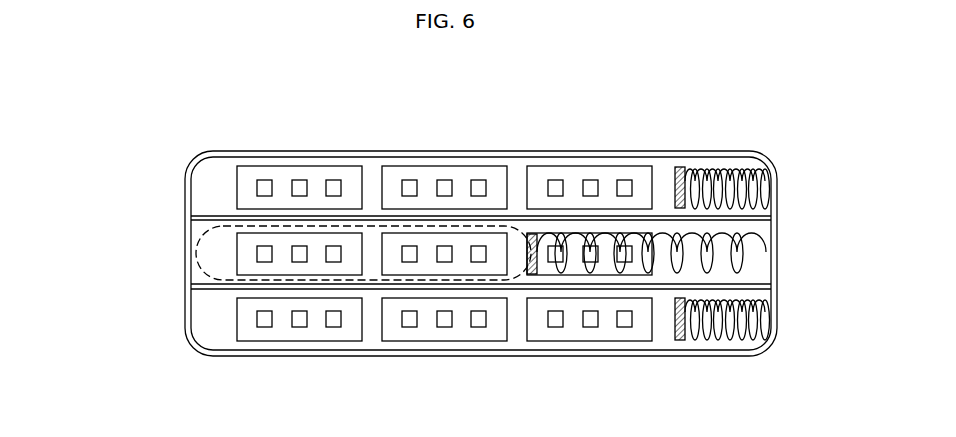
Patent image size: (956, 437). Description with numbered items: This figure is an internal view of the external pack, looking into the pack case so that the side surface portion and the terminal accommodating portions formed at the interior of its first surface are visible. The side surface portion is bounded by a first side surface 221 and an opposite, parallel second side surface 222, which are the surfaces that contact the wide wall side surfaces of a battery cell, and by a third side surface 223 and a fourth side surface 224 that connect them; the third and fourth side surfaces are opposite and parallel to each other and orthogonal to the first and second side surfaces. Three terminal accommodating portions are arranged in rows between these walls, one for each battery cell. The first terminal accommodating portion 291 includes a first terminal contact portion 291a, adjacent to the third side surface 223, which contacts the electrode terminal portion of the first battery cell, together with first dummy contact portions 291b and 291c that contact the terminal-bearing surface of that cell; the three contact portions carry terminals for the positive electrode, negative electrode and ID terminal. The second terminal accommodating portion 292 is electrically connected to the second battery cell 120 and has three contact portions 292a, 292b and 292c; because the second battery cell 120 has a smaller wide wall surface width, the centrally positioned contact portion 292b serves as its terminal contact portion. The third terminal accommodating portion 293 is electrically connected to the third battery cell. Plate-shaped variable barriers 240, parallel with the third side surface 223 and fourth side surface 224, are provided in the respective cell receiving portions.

The second battery cell 120 is at (200, 227).
The first side surface 221 is at (252, 156).
The second side surface 222 is at (275, 351).
The third side surface 223 is at (775, 258).
The fourth side surface 224 is at (190, 196).
The variable barriers 240 is at (527, 234).
The first terminal accommodating portion 291 is at (444, 133).
The first terminal contact portion 291a is at (587, 158).
The first dummy contact portion 291b is at (443, 166).
The first dummy contact portion 291c is at (350, 166).
The second terminal accommodating portion 292 is at (405, 288).
The contact portion 292a is at (527, 274).
The terminal contact portion 292b is at (382, 268).
The contact portion 292c is at (242, 260).
The third terminal accommodating portion 293 is at (550, 342).